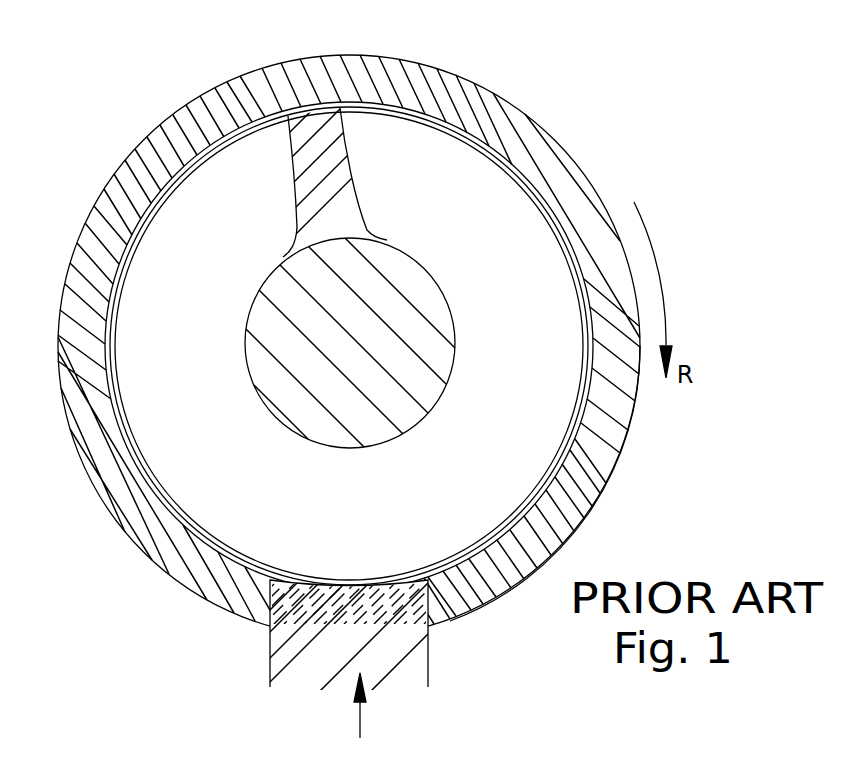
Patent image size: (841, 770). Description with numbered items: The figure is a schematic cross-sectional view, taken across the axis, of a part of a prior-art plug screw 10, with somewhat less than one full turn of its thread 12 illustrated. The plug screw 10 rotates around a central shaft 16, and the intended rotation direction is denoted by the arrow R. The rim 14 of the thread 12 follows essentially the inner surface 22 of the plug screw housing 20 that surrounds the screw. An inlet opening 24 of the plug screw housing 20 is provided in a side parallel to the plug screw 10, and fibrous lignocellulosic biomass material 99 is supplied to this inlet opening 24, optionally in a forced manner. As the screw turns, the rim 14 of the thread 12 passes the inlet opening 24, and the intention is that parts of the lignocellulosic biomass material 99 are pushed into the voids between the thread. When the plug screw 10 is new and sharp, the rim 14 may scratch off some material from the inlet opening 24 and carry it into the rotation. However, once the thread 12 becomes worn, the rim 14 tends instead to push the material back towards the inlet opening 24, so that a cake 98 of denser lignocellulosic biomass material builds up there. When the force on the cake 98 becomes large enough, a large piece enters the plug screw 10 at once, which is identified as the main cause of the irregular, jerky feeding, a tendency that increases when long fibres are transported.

The plug screw 10 is at (488, 203).
The thread 12 is at (415, 150).
The rim 14 is at (125, 247).
The shaft 16 is at (403, 403).
The plug screw housing 20 is at (523, 556).
The inner surface 22 is at (103, 330).
The inlet opening 24 is at (308, 612).
The cake 98 is at (387, 592).
The lignocellulosic biomass material 99 is at (339, 705).